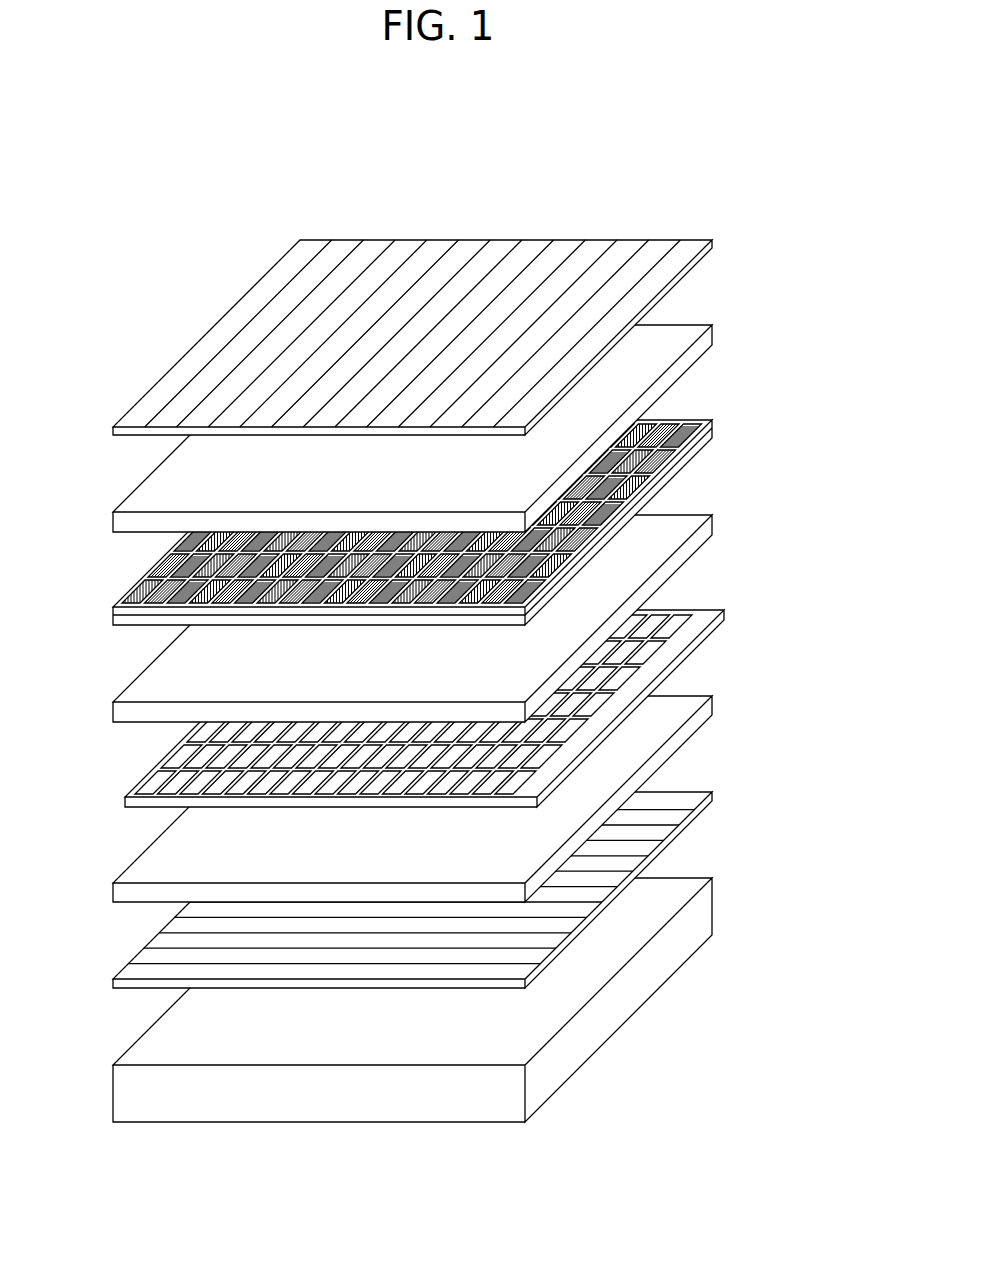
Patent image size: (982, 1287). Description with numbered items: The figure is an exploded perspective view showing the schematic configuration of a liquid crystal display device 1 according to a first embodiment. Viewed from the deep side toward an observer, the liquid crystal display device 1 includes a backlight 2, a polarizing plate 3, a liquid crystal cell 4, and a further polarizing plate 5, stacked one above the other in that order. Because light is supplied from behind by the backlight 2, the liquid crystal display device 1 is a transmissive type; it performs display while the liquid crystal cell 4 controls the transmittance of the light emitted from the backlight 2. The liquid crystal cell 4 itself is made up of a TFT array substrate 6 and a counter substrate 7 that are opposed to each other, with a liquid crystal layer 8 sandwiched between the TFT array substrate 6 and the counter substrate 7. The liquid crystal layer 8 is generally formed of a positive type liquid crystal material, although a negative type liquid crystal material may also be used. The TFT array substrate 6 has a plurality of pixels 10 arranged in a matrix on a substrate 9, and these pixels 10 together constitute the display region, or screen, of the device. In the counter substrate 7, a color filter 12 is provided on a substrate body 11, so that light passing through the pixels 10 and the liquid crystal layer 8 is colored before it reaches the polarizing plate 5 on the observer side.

The liquid crystal display device 1 is at (461, 199).
The backlight 2 is at (672, 960).
The polarizing plate 3 is at (700, 810).
The liquid crystal cell 4 is at (440, 616).
The polarizing plate 5 is at (698, 262).
The TFT array substrate 6 is at (462, 756).
The counter substrate 7 is at (462, 475).
The liquid crystal layer 8 is at (697, 540).
The substrate 9 is at (690, 720).
The pixels 10 is at (670, 652).
The substrate body 11 is at (780, 457).
The color filter 12 is at (700, 445).